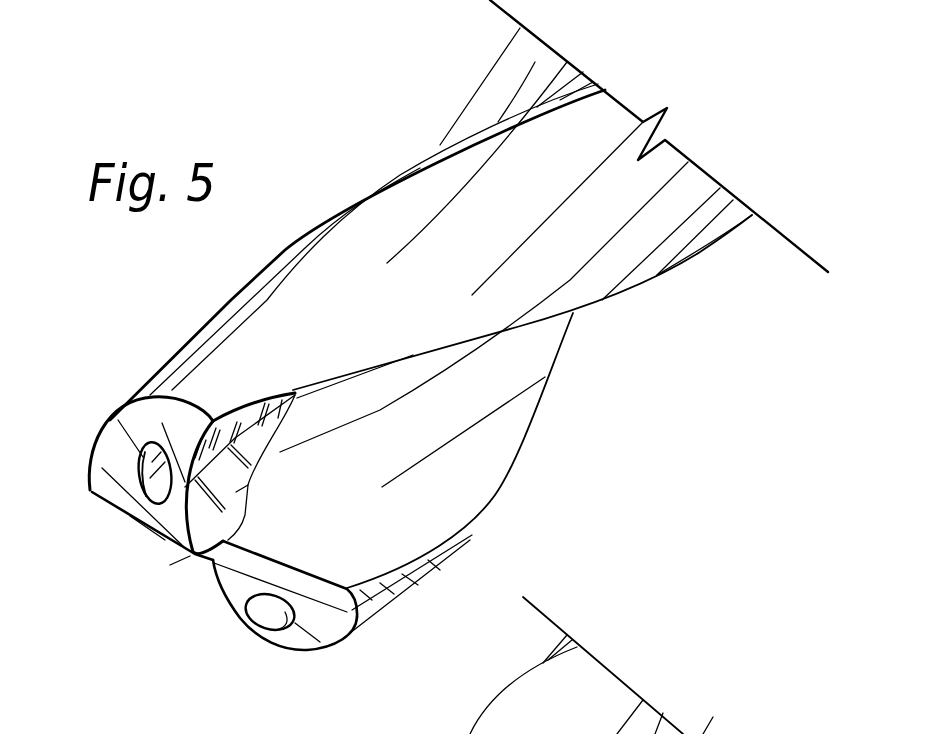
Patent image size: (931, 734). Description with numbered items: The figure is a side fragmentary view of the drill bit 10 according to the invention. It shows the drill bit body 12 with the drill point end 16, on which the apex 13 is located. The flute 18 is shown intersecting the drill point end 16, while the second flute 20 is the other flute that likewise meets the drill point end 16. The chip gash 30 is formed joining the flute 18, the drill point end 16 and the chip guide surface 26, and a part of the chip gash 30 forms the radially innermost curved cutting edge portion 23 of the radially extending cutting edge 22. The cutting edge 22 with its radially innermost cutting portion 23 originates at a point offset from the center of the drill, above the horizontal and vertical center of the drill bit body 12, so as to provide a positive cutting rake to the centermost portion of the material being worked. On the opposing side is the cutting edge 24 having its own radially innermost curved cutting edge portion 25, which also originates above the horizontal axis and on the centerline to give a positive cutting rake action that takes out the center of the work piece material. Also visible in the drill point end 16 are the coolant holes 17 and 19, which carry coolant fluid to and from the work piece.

The drill bit 10 is at (115, 378).
The drill bit body 12 is at (192, 335).
The apex 13 is at (155, 547).
The drill point end 16 is at (108, 465).
The coolant hole 17 is at (150, 472).
The flute 18 is at (483, 472).
The coolant hole 19 is at (280, 618).
The flute 20 is at (492, 90).
The cutting edge 22 is at (308, 573).
The radially innermost curved cutting edge portion 23 is at (213, 562).
The cutting edge 24 is at (361, 191).
The radially innermost curved cutting edge portion 25 is at (170, 565).
The chip guide surface 26 is at (262, 408).
The chip gash 30 is at (236, 492).